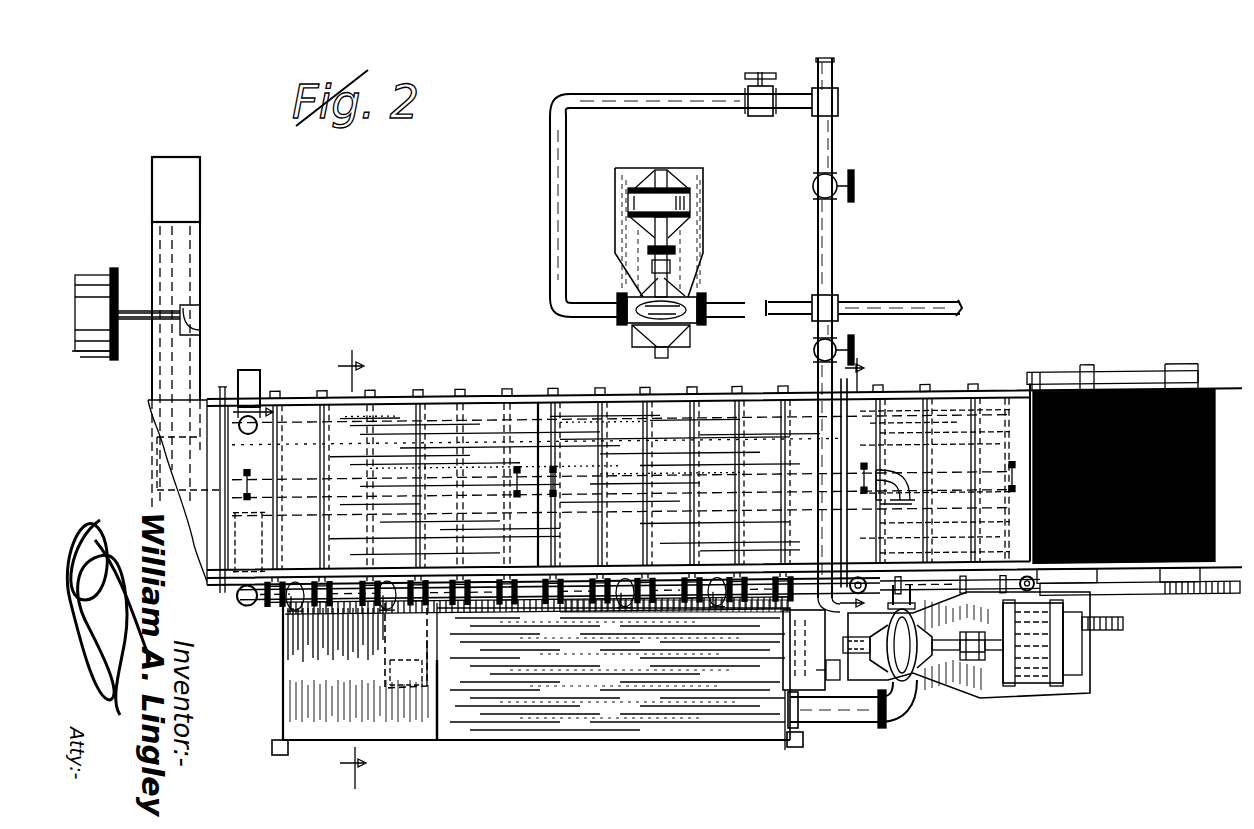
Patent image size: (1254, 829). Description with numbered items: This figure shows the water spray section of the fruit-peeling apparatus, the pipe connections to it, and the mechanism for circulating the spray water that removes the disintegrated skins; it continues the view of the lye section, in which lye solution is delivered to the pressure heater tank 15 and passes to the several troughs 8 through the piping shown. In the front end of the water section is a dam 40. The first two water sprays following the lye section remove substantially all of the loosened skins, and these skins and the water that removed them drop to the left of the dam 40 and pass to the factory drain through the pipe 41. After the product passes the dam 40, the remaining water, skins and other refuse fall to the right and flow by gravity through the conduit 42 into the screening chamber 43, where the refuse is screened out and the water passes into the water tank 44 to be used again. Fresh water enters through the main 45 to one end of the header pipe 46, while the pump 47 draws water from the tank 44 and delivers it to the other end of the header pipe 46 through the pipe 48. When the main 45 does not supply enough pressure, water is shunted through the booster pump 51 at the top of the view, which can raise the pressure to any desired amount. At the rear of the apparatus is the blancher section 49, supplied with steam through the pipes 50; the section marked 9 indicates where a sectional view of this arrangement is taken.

The pressure heater tank 15 is at (88, 290).
The pipe 41 is at (249, 378).
The dam 40 is at (340, 410).
The blancher section 49 is at (940, 410).
The pipe 48 is at (856, 470).
The header pipe 46 is at (566, 611).
The pipes 50 is at (943, 580).
The main 45 is at (834, 64).
The booster pump 51 is at (690, 304).
The water tank 44 is at (531, 679).
The conduit 42 is at (411, 645).
The screening chamber 43 is at (613, 670).
The pump 47 is at (913, 684).
The troughs 8 is at (345, 568).
The section line 9- 9 is at (859, 486).